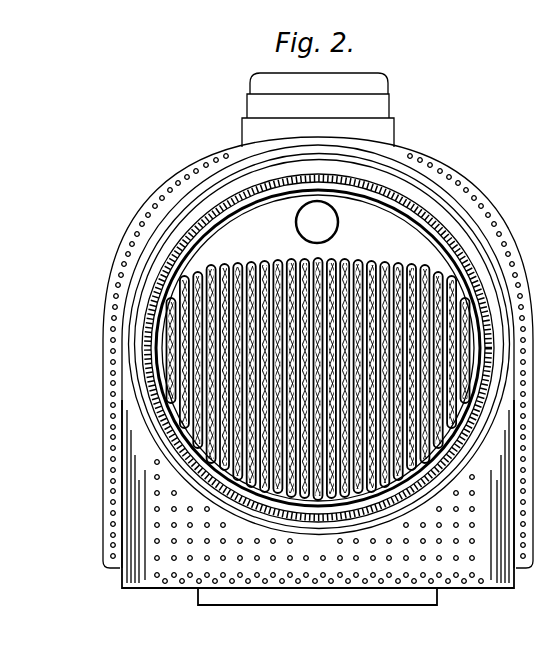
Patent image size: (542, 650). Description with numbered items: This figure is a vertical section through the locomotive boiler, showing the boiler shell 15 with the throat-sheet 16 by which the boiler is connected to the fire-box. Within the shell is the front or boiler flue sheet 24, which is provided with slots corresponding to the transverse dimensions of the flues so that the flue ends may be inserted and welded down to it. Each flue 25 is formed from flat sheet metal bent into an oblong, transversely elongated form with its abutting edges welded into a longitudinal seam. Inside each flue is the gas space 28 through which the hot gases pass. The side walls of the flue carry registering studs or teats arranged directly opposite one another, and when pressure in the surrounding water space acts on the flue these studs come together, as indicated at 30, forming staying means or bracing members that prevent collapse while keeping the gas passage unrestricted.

The boiler shell 15 is at (415, 187).
The throat-sheet 16 is at (147, 478).
The front or boiler flue sheet 24 is at (188, 268).
The flue 25 is at (203, 221).
The gas space 28 is at (214, 272).
The point where registering studs come together 30 is at (290, 261).